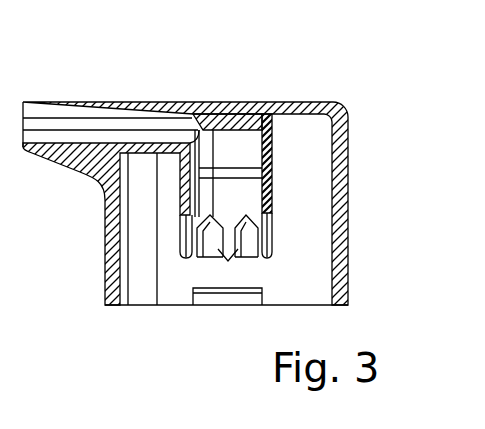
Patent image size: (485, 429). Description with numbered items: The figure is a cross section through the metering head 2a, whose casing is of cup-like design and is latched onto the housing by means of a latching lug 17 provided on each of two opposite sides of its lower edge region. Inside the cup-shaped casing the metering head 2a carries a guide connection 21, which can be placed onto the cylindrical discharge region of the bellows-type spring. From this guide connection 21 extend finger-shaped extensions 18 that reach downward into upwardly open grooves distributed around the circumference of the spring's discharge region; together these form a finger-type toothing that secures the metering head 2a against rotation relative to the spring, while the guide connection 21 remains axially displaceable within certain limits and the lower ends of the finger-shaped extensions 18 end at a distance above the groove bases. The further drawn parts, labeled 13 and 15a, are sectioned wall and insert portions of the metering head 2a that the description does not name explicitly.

The metering head 2a is at (282, 92).
The boss 13 is at (273, 130).
The insert / channel element 15a is at (148, 122).
The latching lug 17 is at (217, 298).
The finger-shaped extensions 18 is at (227, 261).
The guide connection 21 is at (268, 180).